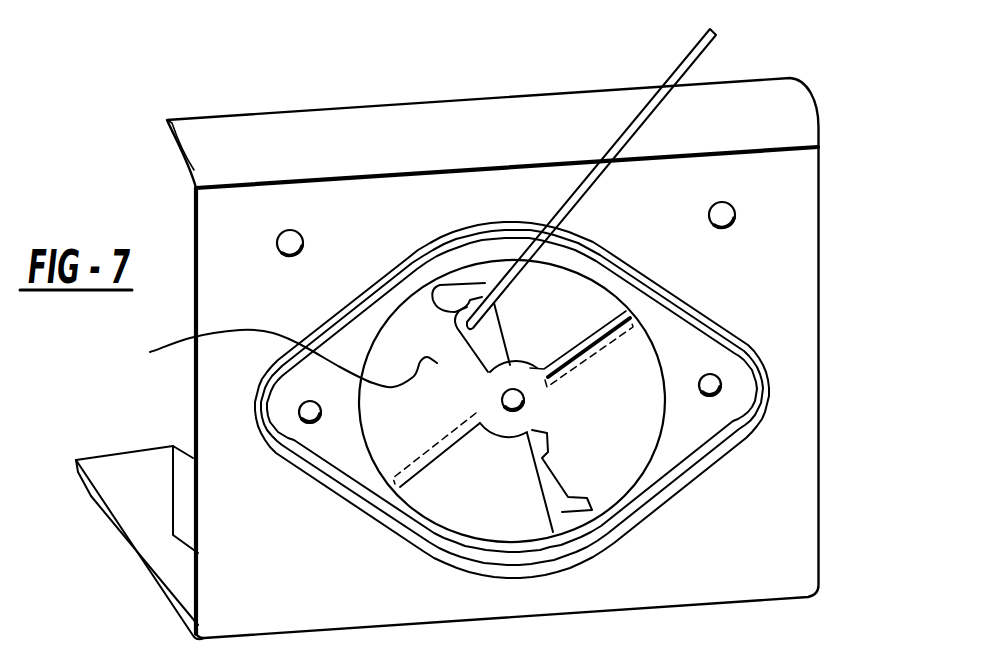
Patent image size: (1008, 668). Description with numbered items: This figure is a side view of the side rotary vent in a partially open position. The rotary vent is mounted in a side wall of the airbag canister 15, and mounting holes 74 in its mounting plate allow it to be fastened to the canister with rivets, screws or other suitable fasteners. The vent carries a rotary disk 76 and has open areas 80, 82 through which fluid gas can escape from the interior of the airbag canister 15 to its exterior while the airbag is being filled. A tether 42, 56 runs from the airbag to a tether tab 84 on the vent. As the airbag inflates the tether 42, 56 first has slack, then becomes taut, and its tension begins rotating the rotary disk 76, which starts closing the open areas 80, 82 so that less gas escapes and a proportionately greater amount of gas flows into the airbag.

The airbag canister 15 is at (818, 187).
The tether 42 is at (667, 178).
The tether 56 is at (707, 44).
The mounting holes 74 is at (713, 397).
The rotary disk 76 is at (279, 359).
The open area 80 is at (562, 507).
The open area 82 is at (483, 276).
The tether tab 84 is at (455, 314).